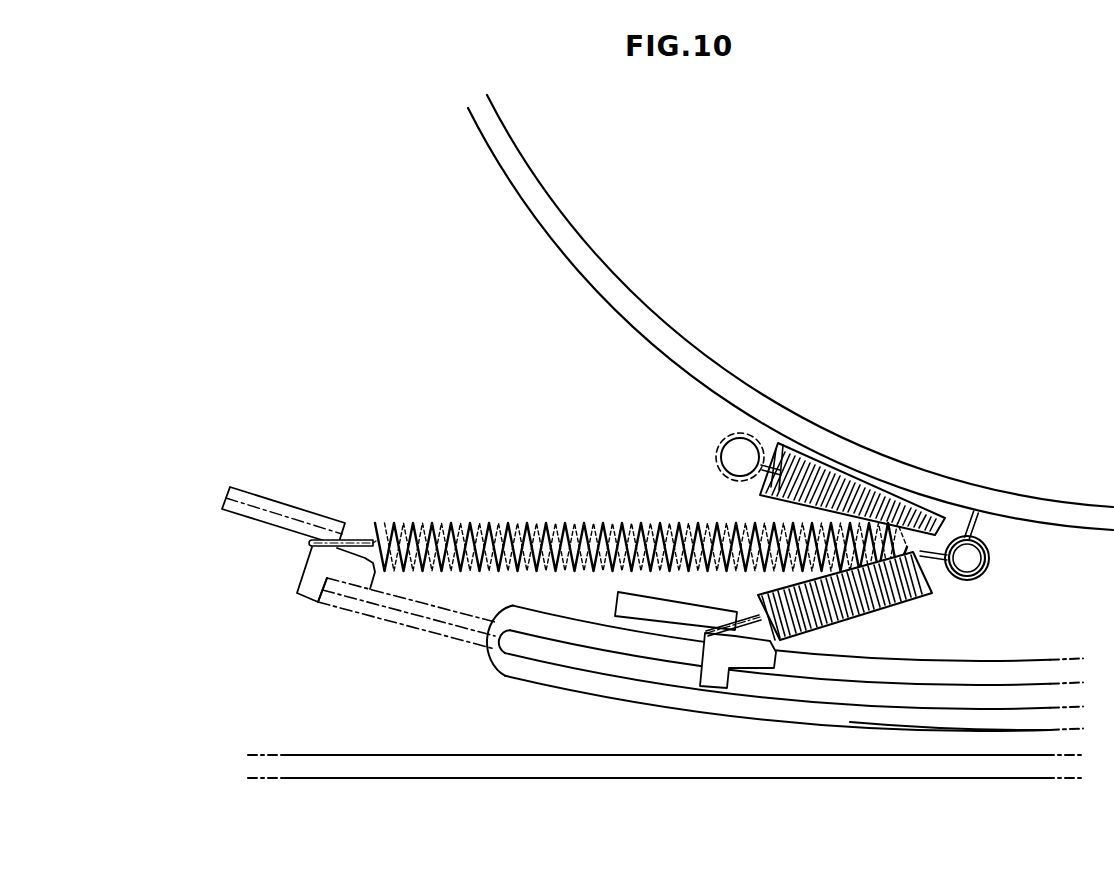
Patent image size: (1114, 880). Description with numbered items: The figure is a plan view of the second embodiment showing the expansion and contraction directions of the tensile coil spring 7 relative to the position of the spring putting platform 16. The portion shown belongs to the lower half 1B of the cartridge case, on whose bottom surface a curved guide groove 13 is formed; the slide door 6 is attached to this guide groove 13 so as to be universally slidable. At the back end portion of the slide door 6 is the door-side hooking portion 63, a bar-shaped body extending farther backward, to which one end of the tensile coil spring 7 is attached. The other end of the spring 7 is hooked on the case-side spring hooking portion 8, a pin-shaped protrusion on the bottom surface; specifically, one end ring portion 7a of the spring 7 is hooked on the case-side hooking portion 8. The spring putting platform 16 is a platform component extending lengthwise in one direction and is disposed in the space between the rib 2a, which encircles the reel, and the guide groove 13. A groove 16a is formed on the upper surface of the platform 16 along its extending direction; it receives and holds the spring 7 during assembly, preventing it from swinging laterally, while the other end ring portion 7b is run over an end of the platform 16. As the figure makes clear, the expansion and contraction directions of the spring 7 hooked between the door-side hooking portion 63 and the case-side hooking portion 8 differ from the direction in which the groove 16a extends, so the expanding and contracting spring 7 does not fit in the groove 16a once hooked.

The rib 2a is at (738, 379).
The tensile coil spring 7 is at (862, 505).
The one end ring portion 7a is at (989, 558).
The other end ring portion 7b is at (718, 448).
The case-side spring hooking portion 8 is at (986, 576).
The spring putting platform 16 is at (760, 508).
The groove 16a is at (770, 491).
The door-side hooking portion 63 is at (318, 514).
The slide door 6 is at (425, 632).
The curved guide groove 13 is at (566, 688).
The lower half 1B is at (713, 779).